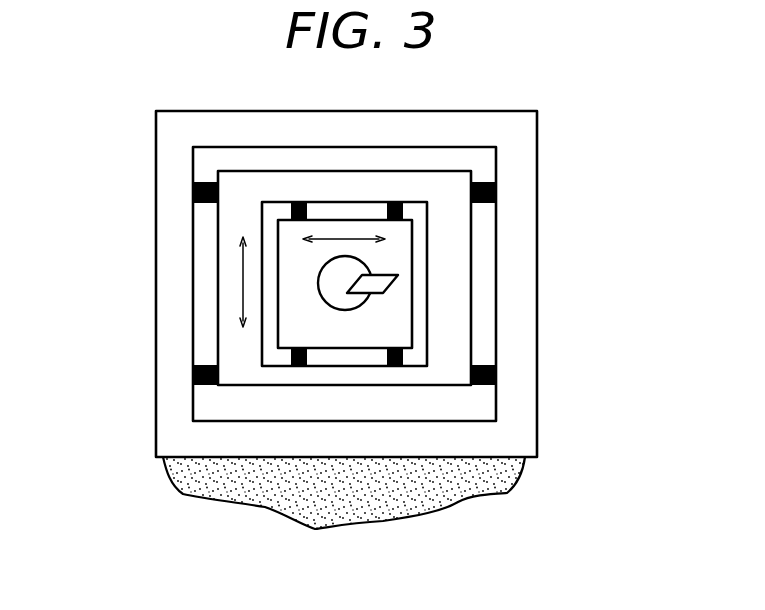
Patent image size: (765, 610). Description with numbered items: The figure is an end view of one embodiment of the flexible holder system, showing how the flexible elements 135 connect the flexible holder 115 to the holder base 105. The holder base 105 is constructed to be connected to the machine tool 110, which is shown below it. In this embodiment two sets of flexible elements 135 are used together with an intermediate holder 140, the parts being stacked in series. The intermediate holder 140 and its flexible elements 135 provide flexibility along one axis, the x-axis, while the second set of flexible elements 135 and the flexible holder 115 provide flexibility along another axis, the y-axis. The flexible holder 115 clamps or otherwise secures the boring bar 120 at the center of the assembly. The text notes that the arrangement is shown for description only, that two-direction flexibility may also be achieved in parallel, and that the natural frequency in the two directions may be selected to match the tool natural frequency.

The holder base 105 is at (520, 167).
The machine tool 110 is at (385, 500).
The flexible holder 115 is at (398, 318).
The boring bar 120 is at (320, 269).
The flexible elements 135 is at (496, 192).
The intermediate holder 140 is at (238, 354).